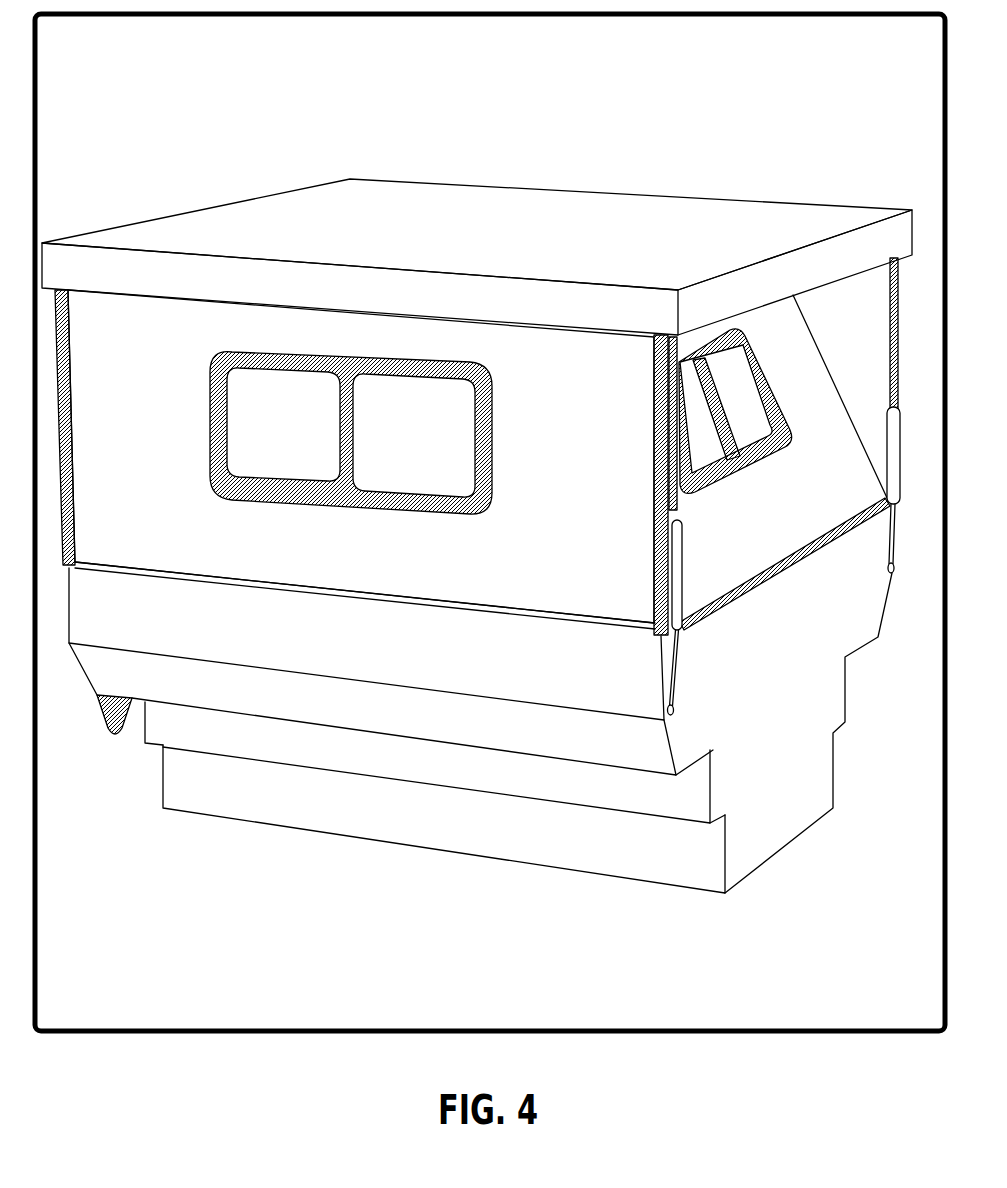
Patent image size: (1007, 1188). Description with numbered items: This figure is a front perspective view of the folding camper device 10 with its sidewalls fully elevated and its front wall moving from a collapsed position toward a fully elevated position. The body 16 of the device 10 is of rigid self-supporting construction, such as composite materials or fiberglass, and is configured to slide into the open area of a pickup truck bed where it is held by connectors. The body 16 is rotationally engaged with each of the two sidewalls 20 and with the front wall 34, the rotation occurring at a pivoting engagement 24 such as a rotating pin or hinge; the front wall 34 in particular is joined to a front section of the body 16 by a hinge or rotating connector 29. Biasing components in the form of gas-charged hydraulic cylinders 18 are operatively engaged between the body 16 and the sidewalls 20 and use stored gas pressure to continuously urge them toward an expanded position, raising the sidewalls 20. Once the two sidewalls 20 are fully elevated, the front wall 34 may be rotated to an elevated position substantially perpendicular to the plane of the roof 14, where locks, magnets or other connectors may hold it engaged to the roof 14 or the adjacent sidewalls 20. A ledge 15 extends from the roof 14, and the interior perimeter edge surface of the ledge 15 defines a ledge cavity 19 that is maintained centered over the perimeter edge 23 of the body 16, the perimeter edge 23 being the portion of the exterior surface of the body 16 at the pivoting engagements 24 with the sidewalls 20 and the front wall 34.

The folding camper device 10 is at (523, 124).
The roof 14 is at (418, 217).
The ledge 15 is at (123, 268).
The ledge cavity 19 is at (555, 387).
The sidewalls 20 is at (497, 557).
The pivoting engagement 24 is at (185, 573).
The front wall 34 is at (807, 468).
The rotating connector 29 is at (735, 595).
The cylinders 18 is at (678, 668).
The perimeter edge 23 is at (307, 633).
The body 16 is at (685, 860).